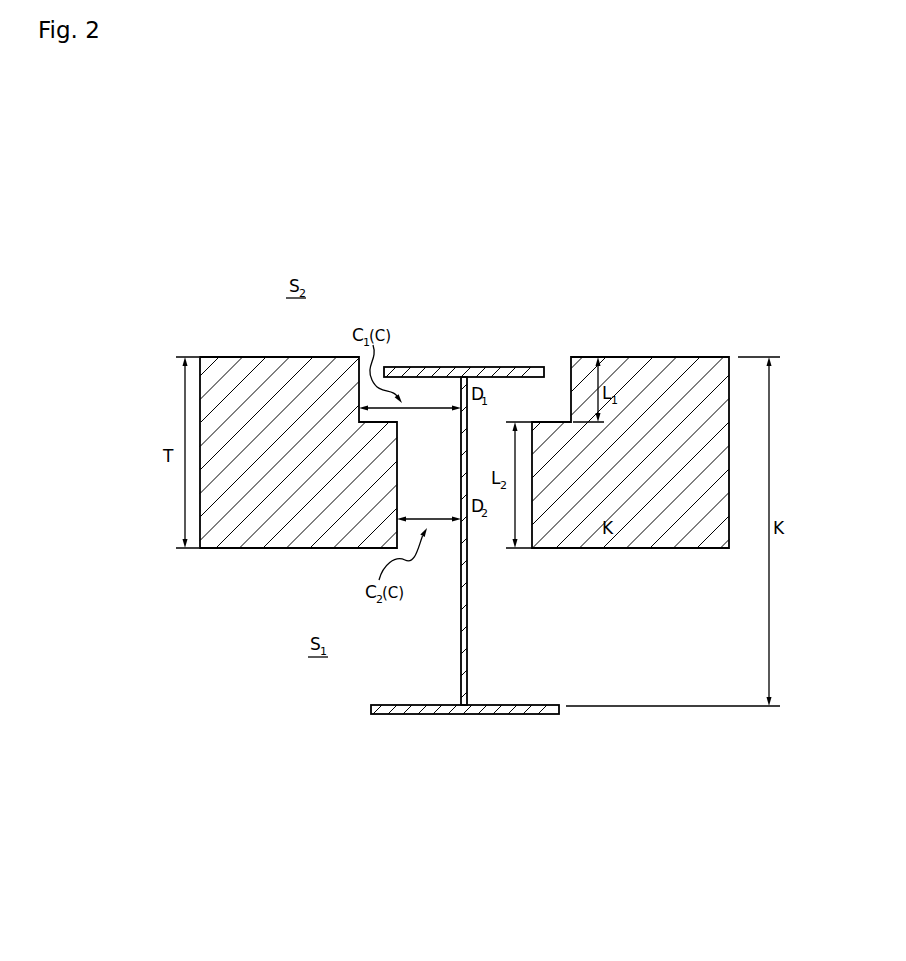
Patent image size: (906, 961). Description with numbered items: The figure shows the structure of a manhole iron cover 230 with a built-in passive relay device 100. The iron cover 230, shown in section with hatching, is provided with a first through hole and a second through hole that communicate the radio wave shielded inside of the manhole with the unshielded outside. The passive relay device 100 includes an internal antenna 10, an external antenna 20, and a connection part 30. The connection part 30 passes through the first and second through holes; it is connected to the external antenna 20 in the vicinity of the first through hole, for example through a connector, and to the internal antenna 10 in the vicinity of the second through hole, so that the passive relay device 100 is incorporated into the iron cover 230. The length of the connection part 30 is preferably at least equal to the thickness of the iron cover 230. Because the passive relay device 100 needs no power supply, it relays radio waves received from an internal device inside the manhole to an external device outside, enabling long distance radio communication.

The internal antenna 10 is at (497, 712).
The external antenna 20 is at (508, 367).
The connection part 30 is at (467, 640).
The passive relay device 100 is at (465, 532).
The iron cover 230 is at (675, 372).